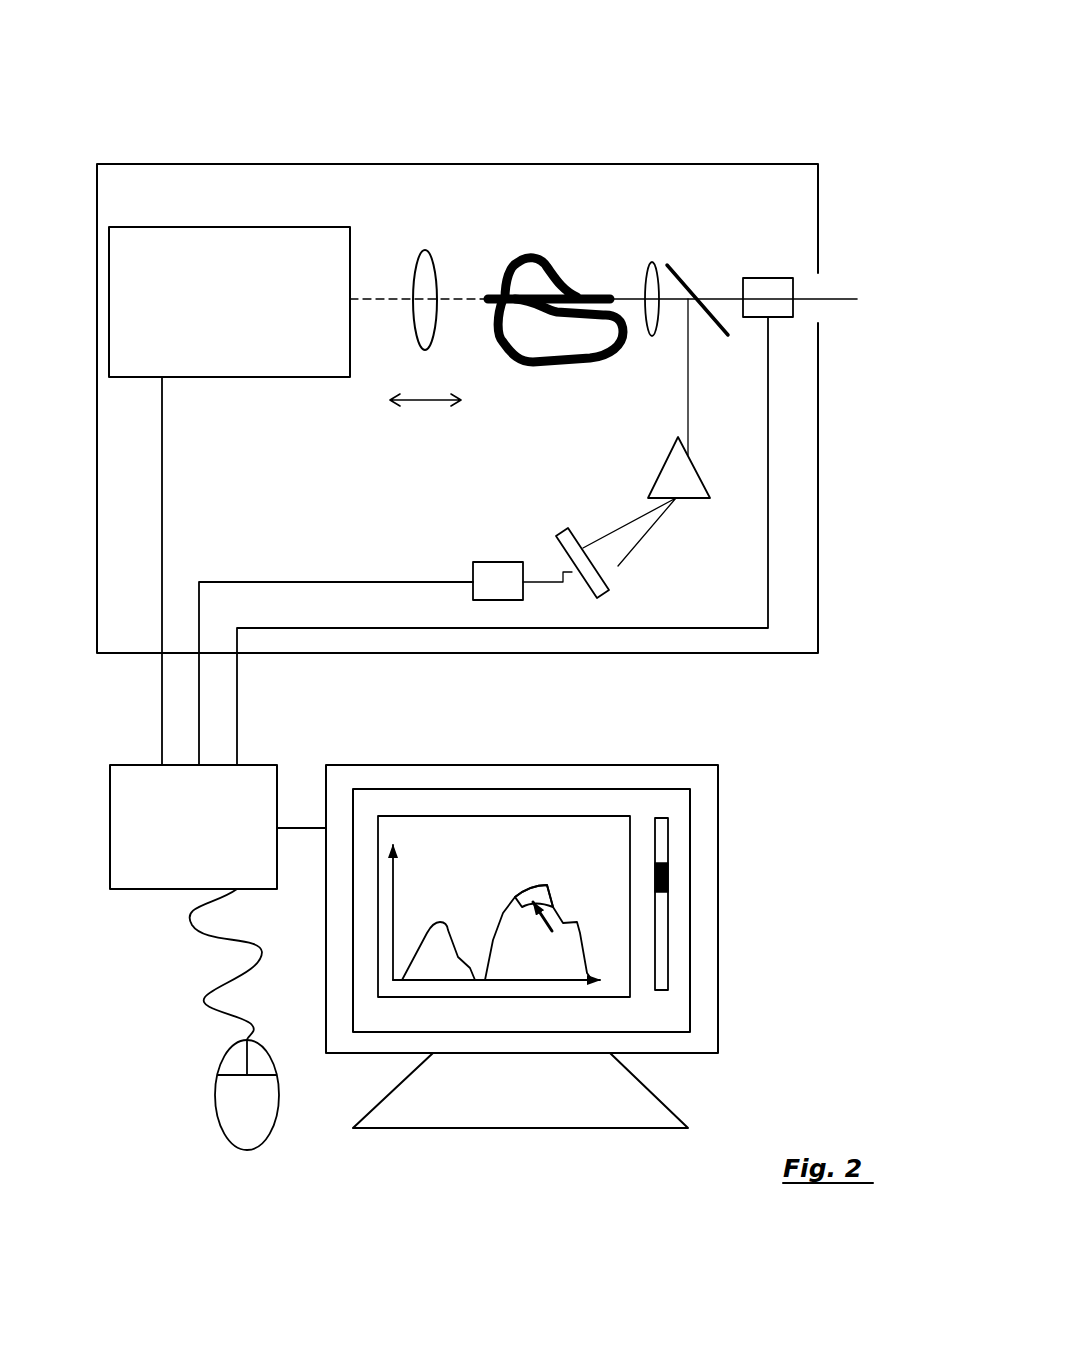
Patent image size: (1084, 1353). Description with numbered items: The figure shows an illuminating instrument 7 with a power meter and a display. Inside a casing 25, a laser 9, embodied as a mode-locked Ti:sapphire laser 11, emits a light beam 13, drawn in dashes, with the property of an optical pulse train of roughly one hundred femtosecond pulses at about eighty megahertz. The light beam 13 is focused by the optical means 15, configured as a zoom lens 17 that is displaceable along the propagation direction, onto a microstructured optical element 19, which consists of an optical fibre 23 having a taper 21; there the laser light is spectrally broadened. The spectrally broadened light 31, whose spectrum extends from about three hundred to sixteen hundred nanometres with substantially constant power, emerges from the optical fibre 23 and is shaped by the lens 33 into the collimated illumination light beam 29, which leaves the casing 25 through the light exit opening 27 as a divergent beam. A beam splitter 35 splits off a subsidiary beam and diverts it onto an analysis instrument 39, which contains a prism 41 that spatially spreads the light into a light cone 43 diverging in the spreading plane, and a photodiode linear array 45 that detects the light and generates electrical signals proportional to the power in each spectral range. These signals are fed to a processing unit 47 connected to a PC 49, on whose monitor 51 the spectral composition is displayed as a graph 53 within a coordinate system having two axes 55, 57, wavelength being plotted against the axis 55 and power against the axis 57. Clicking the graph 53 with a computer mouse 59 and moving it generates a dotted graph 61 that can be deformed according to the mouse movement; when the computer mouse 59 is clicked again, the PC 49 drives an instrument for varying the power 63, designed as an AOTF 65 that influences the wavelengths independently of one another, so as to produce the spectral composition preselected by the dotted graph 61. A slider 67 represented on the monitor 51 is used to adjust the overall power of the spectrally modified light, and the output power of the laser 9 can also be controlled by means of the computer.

The illuminating instrument 7 is at (315, 105).
The laser 9 is at (162, 218).
The mode-locked Ti:sapphire laser 11 is at (233, 238).
The light beam 13 is at (362, 296).
The optical means 15 is at (444, 234).
The zoom lens 17 is at (428, 326).
The microstructured optical element 19 is at (526, 396).
The taper 21 is at (557, 365).
The optical fibre 23 is at (568, 280).
The casing 25 is at (820, 616).
The light exit opening 27 is at (820, 287).
The illumination light beam 29 is at (867, 300).
The spectrally broadened light 31 is at (632, 288).
The lens 33 is at (656, 320).
The beam splitter 35 is at (676, 268).
The analysis instrument 39 is at (574, 491).
The prism 41 is at (672, 466).
The light cone 43 is at (617, 550).
The photodiode linear array 45 is at (613, 602).
The processing unit 47 is at (512, 578).
The PC 49 is at (123, 840).
The monitor 51 is at (617, 778).
The graph 53 is at (520, 905).
The axis 55 is at (503, 980).
The axis 57 is at (396, 882).
The computer mouse 59 is at (250, 1123).
The dotted graph 61 is at (532, 897).
The instrument for varying the power 63 is at (768, 272).
The AOTF 65 is at (776, 310).
The slider 67 is at (668, 850).